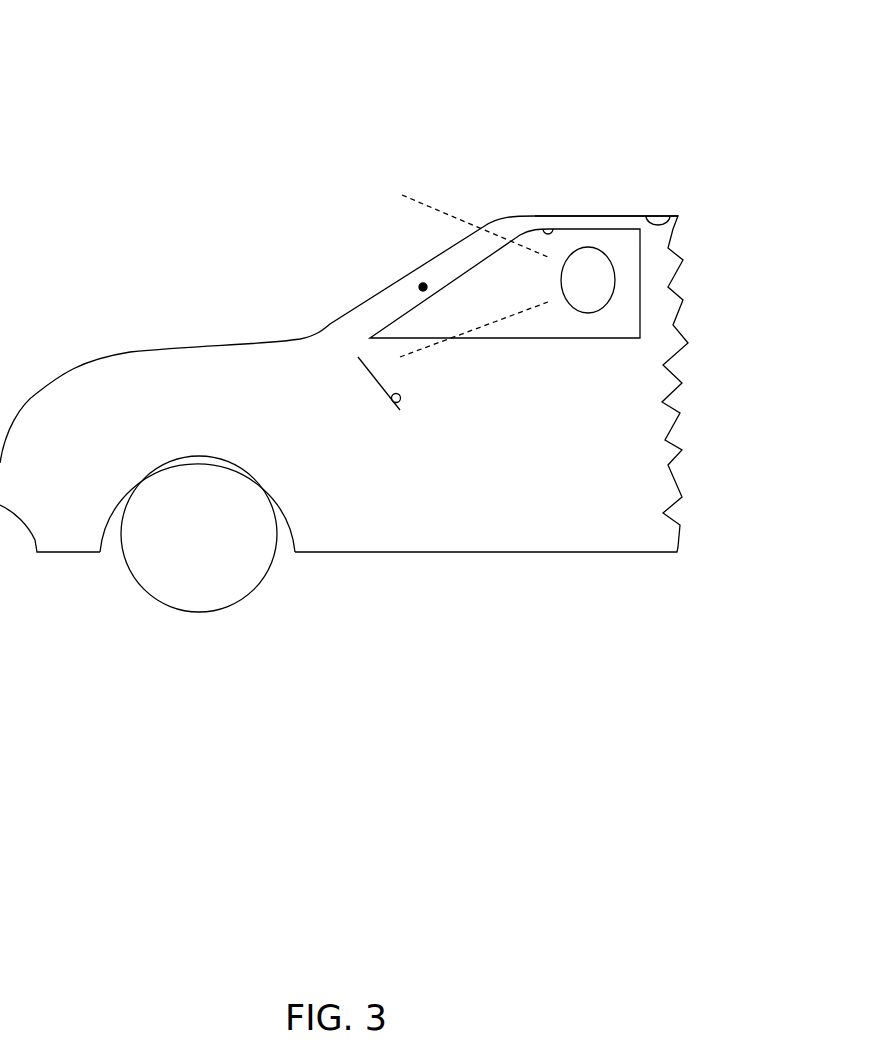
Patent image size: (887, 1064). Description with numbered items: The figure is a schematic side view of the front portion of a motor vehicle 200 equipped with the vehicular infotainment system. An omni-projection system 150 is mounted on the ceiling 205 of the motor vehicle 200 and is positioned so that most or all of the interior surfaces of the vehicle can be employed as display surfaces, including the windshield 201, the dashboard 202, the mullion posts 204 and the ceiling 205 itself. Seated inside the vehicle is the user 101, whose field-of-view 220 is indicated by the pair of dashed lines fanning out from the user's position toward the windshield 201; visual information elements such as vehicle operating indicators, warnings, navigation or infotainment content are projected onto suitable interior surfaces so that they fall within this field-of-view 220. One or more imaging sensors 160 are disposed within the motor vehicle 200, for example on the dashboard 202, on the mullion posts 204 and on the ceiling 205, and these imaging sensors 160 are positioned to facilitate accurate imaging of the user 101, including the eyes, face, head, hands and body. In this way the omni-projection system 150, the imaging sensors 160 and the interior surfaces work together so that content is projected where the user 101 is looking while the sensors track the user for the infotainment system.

The motor vehicle 200 is at (107, 74).
The user 101 is at (607, 291).
The omni-projection system 150 is at (673, 228).
The imaging sensors 160 is at (547, 228).
The windshield 201 is at (461, 277).
The dashboard 202 is at (380, 387).
The mullion posts 204 is at (420, 286).
The ceiling 205 is at (583, 217).
The field-of-view 220 is at (430, 207).